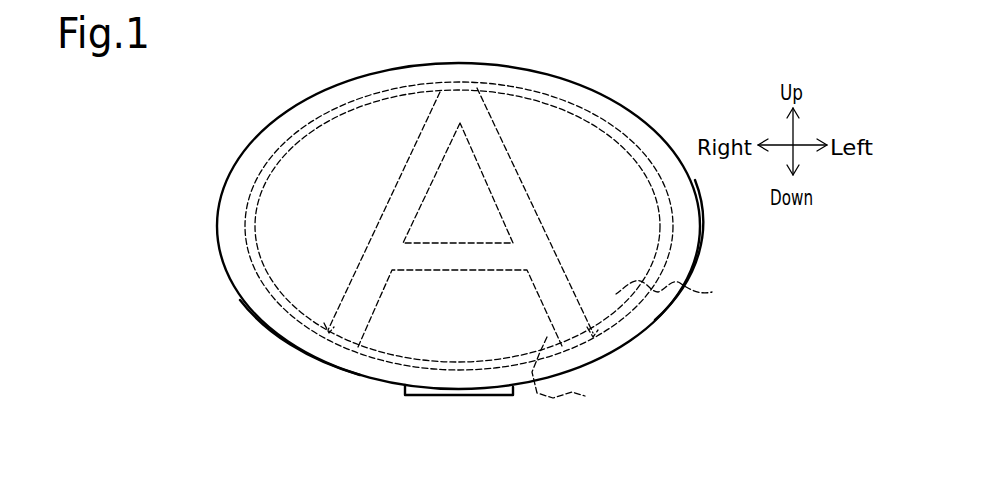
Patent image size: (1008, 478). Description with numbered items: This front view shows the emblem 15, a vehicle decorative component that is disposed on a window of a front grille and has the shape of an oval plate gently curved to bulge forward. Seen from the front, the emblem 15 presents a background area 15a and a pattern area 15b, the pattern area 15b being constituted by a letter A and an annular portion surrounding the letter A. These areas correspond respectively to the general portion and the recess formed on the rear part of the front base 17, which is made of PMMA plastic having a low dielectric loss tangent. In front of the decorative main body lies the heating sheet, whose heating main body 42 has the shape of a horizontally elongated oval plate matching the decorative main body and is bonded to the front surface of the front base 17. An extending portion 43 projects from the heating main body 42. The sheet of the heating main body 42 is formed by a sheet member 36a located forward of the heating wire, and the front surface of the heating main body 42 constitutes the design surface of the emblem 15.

The emblem 15 is at (230, 108).
The background area 15a is at (734, 293).
The pattern area 15b is at (629, 374).
The front base 17 is at (630, 335).
The sheet member 36a is at (300, 343).
The heating main body 42 is at (686, 233).
The extending portion 43 is at (458, 397).